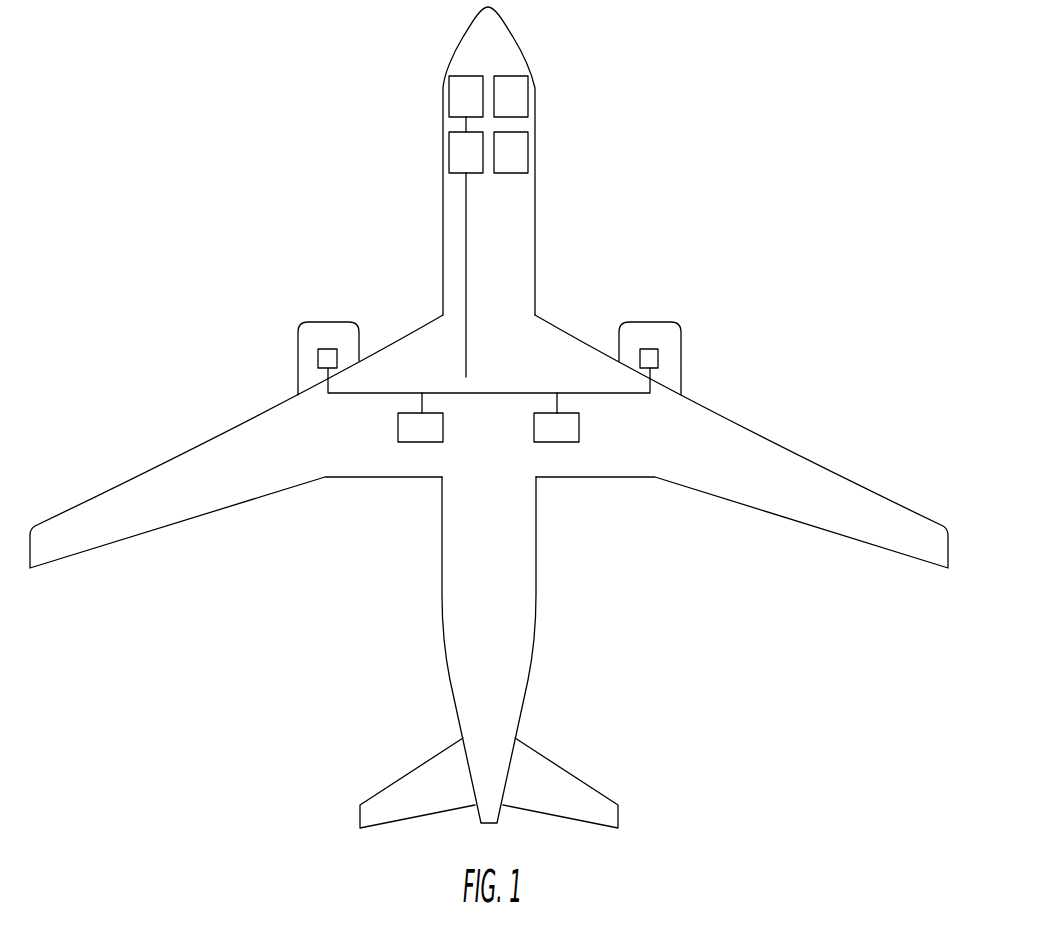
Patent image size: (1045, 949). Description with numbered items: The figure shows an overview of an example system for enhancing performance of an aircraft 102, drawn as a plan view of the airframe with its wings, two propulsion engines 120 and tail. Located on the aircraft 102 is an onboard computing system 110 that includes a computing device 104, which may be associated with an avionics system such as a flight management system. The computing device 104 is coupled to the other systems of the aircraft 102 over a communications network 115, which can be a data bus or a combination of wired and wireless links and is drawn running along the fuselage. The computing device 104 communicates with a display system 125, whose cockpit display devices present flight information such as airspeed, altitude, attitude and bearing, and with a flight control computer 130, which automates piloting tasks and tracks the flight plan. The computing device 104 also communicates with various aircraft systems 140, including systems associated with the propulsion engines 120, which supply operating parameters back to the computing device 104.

The aircraft 102 is at (522, 207).
The computing device 104 is at (449, 146).
The onboard computing system 110 is at (648, 107).
The communications network 115 is at (466, 212).
The propulsion engine 120 is at (350, 331).
The display system 125 is at (528, 86).
The flight control computer 130 is at (449, 88).
The aircraft systems 140 is at (528, 146).